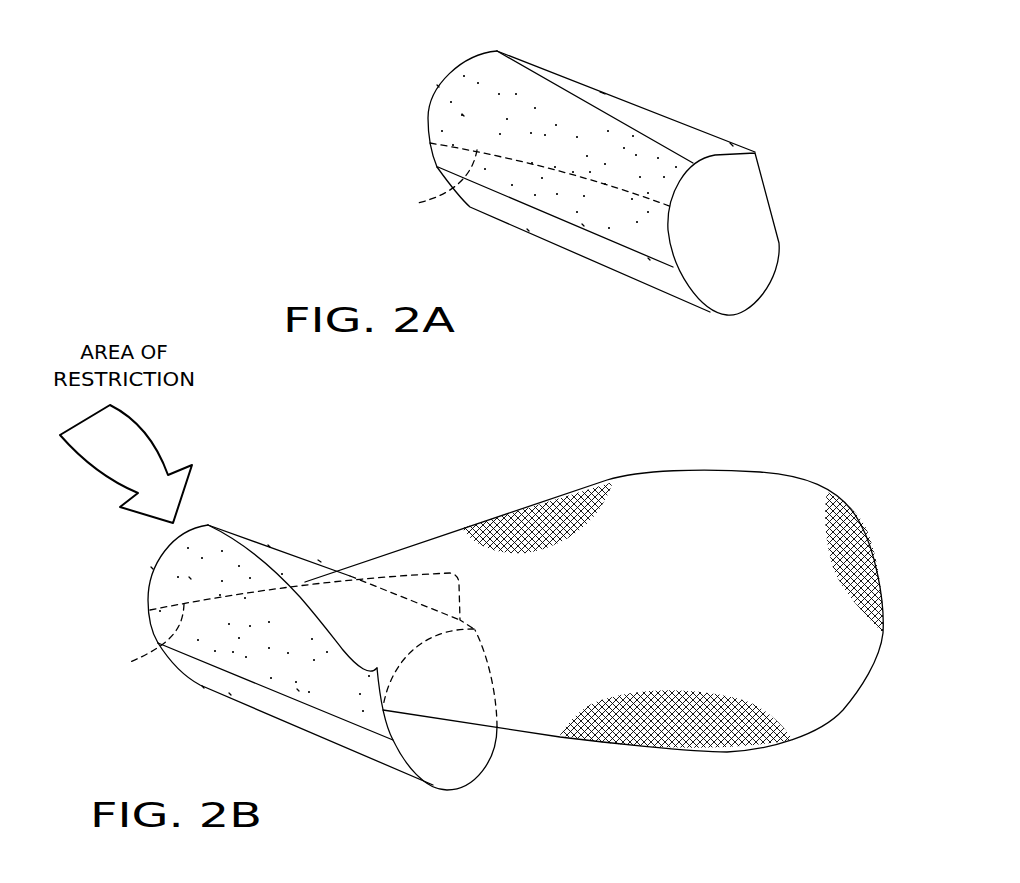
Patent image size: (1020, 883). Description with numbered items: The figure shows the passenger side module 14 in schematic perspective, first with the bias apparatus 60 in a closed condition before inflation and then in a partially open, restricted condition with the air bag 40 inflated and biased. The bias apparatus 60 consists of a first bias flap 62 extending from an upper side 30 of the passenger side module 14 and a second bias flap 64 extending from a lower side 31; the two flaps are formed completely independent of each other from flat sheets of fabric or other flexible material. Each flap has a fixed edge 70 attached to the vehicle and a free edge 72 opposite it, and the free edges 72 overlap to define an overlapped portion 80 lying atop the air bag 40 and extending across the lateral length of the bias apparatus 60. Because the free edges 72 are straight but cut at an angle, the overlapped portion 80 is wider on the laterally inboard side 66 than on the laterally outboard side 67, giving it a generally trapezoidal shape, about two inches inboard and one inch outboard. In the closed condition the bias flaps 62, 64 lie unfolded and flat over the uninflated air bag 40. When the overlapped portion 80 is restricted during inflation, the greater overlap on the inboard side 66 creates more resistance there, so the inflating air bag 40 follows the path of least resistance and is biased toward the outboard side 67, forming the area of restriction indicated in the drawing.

In FIG. 2A, the passenger side module 14 is at (692, 102).
In FIG. 2B, the passenger side module 14 is at (345, 520).
In FIG. 2A, the upper side 30 is at (591, 86).
In FIG. 2B, the upper side 30 is at (335, 567).
In FIG. 2A, the lower side 31 is at (528, 230).
In FIG. 2B, the lower side 31 is at (230, 694).
In FIG. 2B, the air bag 40 is at (773, 480).
In FIG. 2A, the bias apparatus 60 is at (620, 125).
In FIG. 2B, the bias apparatus 60 is at (272, 565).
In FIG. 2A, the first bias flap 62 is at (702, 130).
In FIG. 2B, the first bias flap 62 is at (324, 555).
In FIG. 2A, the second bias flap 64 is at (582, 225).
In FIG. 2B, the second bias flap 64 is at (296, 690).
In FIG. 2A, the inboard side 66 is at (438, 86).
In FIG. 2B, the inboard side 66 is at (152, 568).
In FIG. 2A, the outboard side 67 is at (748, 211).
In FIG. 2B, the outboard side 67 is at (461, 763).
In FIG. 2A, the fixed edge 70 is at (733, 143).
In FIG. 2B, the fixed edge 70 is at (269, 545).
In FIG. 2A, the free edge 72 is at (535, 73).
In FIG. 2B, the free edge 72 is at (253, 541).
In FIG. 2A, the overlapped portion 80 is at (463, 115).
In FIG. 2B, the overlapped portion 80 is at (190, 578).